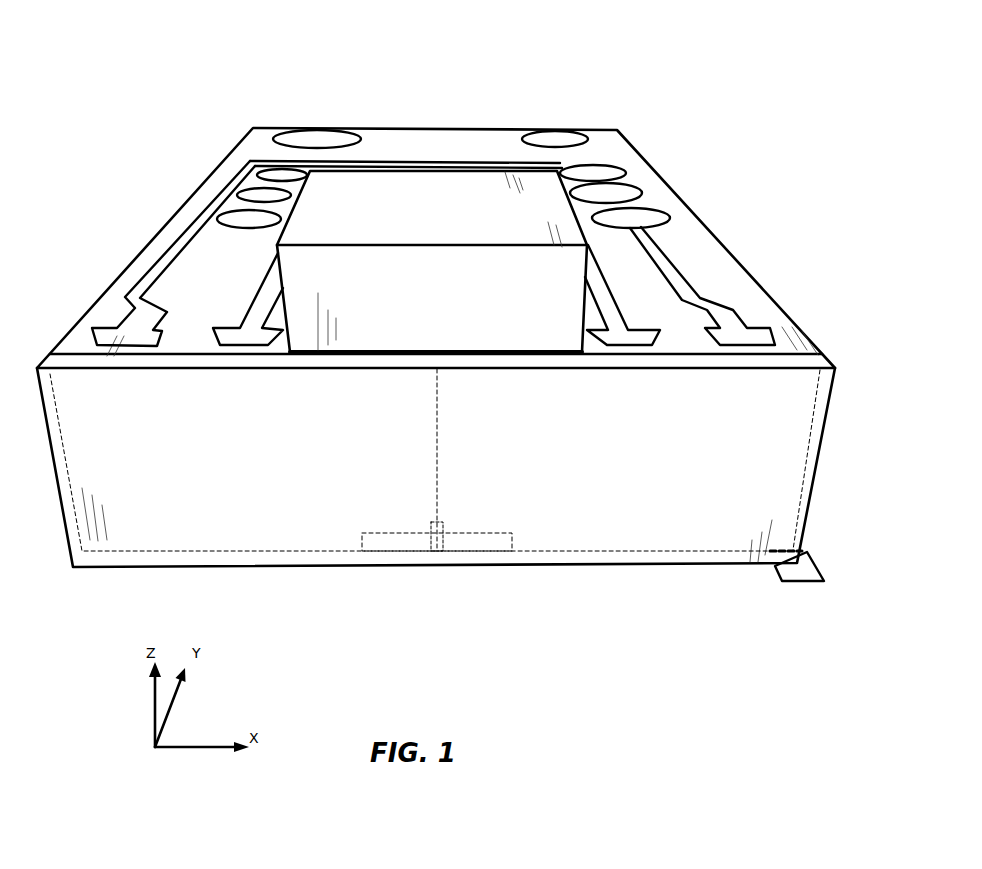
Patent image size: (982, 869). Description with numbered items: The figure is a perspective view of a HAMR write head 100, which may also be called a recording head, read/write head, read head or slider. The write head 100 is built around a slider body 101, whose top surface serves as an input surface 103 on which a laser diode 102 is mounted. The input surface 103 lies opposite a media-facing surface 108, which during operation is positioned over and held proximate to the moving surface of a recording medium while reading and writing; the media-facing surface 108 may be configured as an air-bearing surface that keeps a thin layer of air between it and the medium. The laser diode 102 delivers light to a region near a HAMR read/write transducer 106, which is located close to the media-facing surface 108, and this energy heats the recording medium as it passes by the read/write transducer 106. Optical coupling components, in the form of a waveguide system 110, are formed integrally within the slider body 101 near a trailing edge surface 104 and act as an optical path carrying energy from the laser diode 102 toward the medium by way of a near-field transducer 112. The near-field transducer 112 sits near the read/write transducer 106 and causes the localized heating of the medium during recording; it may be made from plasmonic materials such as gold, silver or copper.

The HAMR write head 100 is at (609, 84).
The slider body 101 is at (227, 153).
The laser diode 102 is at (390, 178).
The input surface 103 is at (103, 313).
The trailing edge surface 104 is at (137, 540).
The read/write transducer 106 is at (440, 553).
The media-facing surface 108 is at (813, 582).
The waveguide system 110 is at (437, 442).
The near-field transducer 112 is at (438, 550).